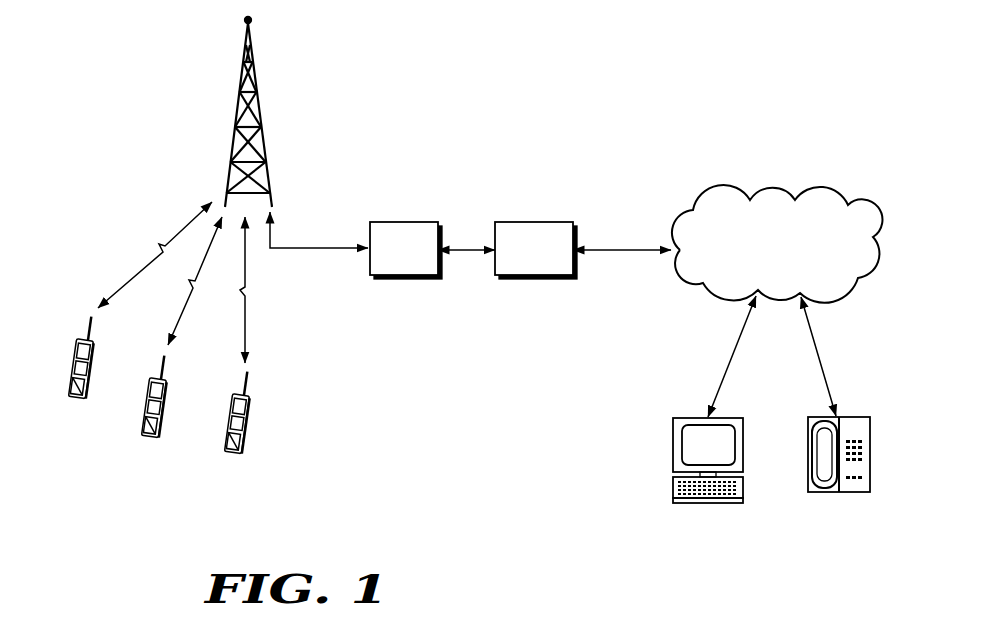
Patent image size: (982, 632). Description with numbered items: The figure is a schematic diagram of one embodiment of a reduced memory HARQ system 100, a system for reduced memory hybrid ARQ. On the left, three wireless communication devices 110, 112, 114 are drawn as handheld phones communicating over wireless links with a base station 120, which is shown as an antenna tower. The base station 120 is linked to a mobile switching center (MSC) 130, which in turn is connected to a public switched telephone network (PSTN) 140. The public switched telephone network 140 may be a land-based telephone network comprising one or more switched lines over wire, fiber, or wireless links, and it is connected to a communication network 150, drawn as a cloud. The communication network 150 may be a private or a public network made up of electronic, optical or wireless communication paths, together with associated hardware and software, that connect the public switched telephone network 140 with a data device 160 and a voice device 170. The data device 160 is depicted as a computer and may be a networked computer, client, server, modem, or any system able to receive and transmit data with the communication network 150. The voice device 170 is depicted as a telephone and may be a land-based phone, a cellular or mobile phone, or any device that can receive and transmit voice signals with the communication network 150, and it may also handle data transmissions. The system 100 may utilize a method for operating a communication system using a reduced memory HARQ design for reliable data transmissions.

The reduced memory HARQ system 100 is at (469, 536).
The wireless communication device 110 is at (73, 398).
The wireless communication device 112 is at (145, 433).
The wireless communication device 114 is at (227, 453).
The base station 120 is at (244, 72).
The mobile switching center 130 is at (403, 221).
The public switched telephone network 140 is at (533, 221).
The communication network 150 is at (776, 186).
The data device 160 is at (706, 505).
The voice device 170 is at (845, 494).